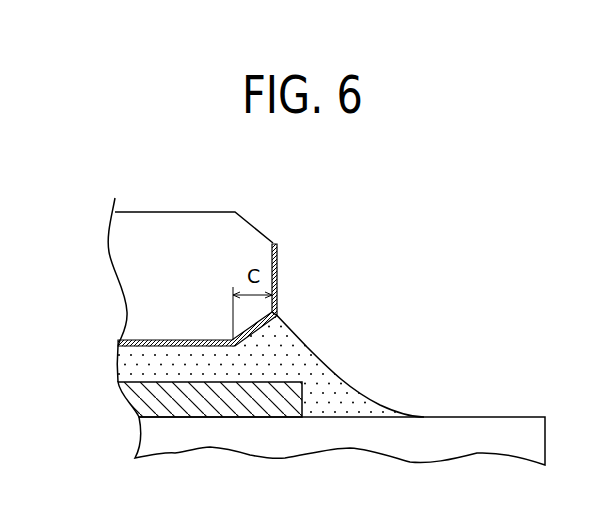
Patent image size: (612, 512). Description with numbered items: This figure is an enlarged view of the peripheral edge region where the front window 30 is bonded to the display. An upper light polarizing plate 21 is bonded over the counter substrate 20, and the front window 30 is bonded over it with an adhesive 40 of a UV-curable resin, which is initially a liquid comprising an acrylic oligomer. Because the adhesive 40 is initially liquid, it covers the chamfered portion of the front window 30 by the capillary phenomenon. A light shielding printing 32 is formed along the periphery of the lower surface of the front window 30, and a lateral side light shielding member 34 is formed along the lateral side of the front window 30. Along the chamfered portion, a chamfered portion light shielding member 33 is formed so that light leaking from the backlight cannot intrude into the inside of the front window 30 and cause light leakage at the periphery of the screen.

The counter substrate 20 is at (152, 438).
The upper light polarizing plate 21 is at (138, 402).
The front window 30 is at (120, 243).
The light shielding printing 32 is at (170, 340).
The chamfered portion light shielding member 33 is at (250, 338).
The lateral side light shielding member 34 is at (278, 260).
The adhesive 40 is at (122, 363).